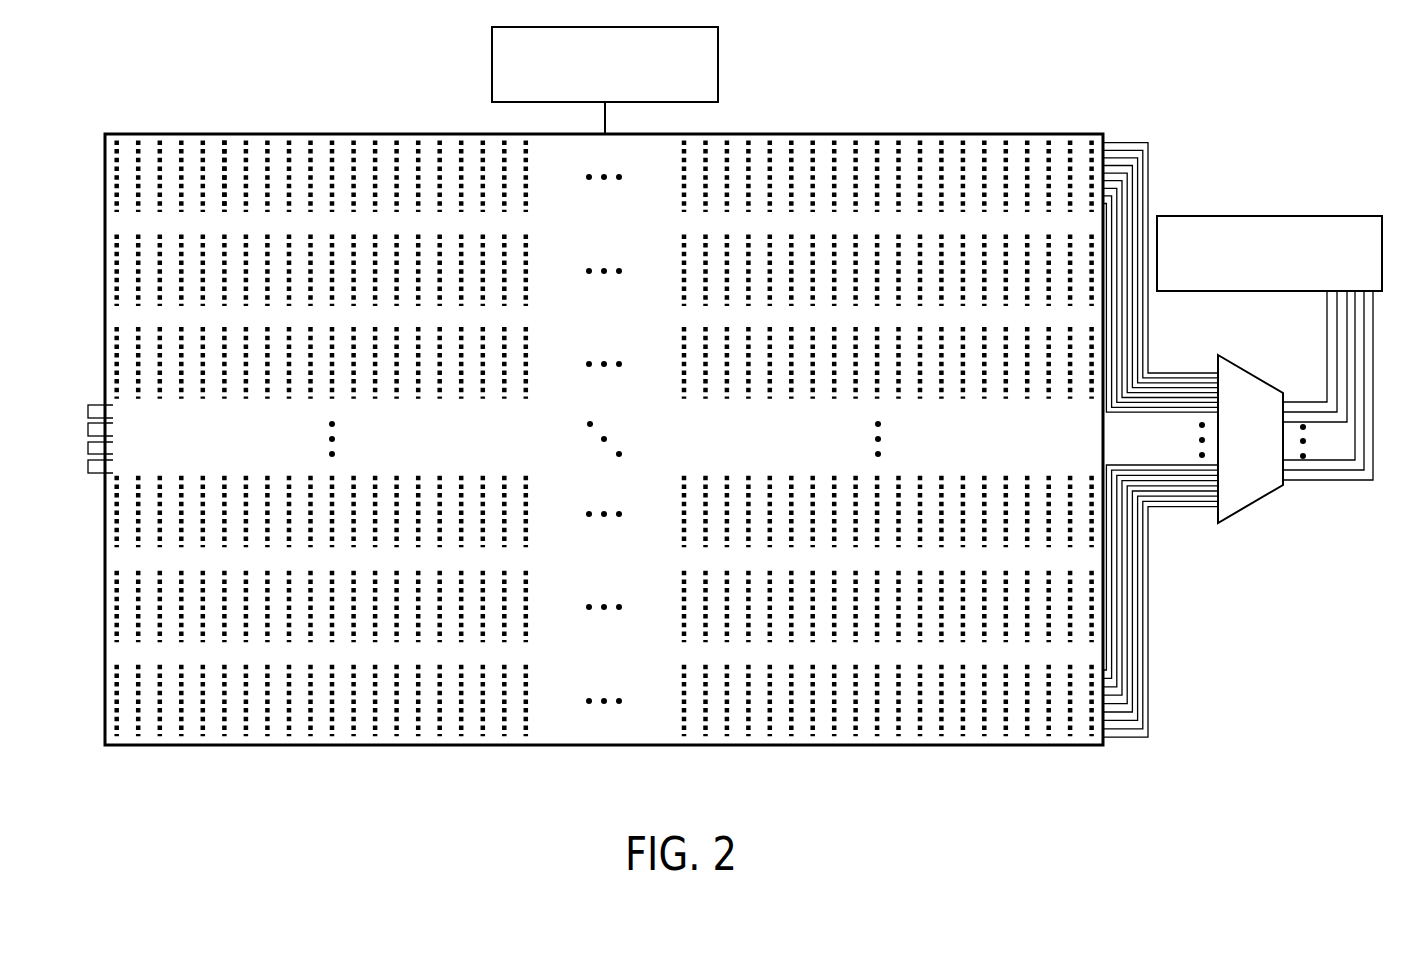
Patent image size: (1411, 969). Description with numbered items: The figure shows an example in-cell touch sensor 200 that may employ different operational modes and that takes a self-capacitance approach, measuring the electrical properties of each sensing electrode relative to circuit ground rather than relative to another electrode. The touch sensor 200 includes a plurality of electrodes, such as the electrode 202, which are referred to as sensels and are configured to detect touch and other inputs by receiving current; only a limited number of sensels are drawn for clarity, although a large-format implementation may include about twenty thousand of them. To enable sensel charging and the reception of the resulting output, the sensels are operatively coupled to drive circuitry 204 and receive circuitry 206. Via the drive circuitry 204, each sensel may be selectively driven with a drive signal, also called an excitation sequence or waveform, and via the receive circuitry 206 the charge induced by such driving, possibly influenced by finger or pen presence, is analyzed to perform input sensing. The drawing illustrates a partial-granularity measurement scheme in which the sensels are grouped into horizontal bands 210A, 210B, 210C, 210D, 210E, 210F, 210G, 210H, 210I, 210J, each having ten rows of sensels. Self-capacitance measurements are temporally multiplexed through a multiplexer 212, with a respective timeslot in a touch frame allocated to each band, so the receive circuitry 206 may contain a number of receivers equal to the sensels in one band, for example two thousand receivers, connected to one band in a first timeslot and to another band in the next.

The in-cell touch sensor 200 is at (868, 72).
The electrode 202 is at (224, 140).
The drive circuitry 204 is at (605, 80).
The receive circuitry 206 is at (1269, 253).
The horizontal band 210A is at (105, 214).
The horizontal band 210B is at (105, 308).
The horizontal band 210C is at (105, 401).
The horizontal band 210D is at (88, 411).
The horizontal band 210E is at (88, 429).
The horizontal band 210F is at (88, 448).
The horizontal band 210G is at (88, 466).
The horizontal band 210H is at (105, 549).
The horizontal band 210I is at (105, 644).
The horizontal band 210J is at (105, 738).
The multiplexer 212 is at (1286, 407).